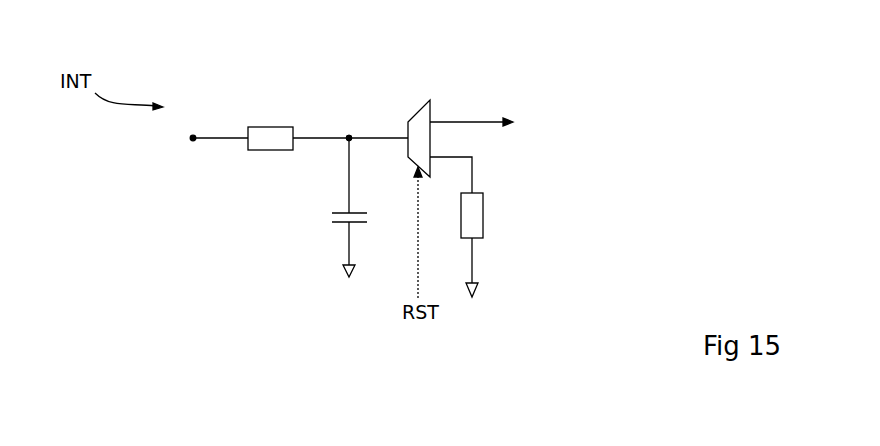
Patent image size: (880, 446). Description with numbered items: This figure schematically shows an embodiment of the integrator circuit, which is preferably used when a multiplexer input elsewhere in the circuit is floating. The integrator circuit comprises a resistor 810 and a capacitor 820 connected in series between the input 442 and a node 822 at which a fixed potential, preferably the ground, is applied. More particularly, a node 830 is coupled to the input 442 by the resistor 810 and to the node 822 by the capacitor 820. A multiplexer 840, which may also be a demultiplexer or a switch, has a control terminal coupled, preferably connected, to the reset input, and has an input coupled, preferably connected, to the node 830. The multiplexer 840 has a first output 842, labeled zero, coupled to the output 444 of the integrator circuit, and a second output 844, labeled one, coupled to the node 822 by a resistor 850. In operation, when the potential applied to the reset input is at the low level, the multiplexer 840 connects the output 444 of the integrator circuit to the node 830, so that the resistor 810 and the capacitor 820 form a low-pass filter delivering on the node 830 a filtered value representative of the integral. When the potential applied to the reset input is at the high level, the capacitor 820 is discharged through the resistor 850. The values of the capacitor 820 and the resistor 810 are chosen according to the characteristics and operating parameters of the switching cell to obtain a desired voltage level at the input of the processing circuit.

The input 442 is at (193, 143).
The resistor 810 is at (266, 136).
The node 830 is at (349, 136).
The capacitor 820 is at (335, 224).
The node of application of a fixed potential 822 is at (345, 270).
The multiplexer 840 is at (413, 110).
The output 842 is at (432, 116).
The output 844 is at (432, 148).
The output 444 is at (478, 122).
The resistor 850 is at (485, 218).